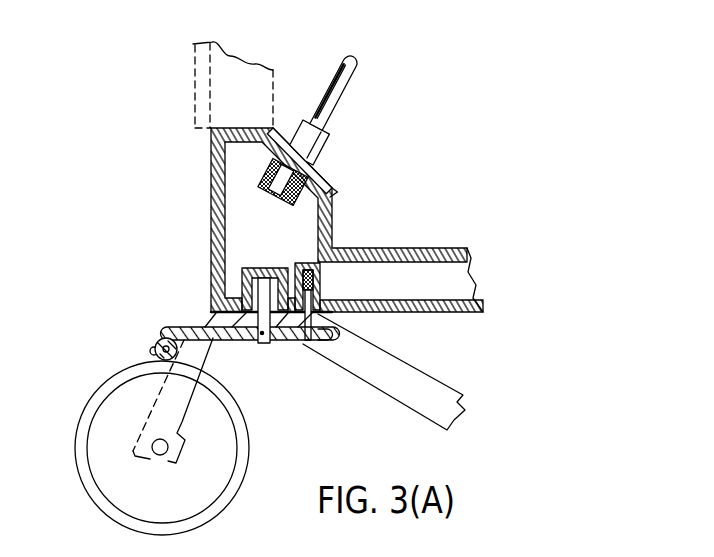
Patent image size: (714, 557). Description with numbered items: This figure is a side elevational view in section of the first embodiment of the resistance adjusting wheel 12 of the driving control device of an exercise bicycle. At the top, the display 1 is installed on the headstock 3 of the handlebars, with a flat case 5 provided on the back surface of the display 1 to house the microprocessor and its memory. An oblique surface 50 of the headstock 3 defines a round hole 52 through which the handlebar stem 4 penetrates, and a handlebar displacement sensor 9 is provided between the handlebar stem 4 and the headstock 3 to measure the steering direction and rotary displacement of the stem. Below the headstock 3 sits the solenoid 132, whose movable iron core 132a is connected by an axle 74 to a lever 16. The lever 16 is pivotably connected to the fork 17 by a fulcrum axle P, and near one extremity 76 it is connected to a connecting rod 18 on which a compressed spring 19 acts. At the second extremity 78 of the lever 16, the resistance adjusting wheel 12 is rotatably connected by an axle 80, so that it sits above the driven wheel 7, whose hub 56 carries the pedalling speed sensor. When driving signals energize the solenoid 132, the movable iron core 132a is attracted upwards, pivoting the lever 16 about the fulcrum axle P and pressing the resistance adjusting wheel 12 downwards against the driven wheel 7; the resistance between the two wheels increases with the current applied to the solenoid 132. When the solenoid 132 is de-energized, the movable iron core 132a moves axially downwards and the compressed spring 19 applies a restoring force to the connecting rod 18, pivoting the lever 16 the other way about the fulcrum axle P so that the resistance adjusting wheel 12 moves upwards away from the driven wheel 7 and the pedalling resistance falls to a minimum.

The display 1 is at (222, 77).
The headstock 3 is at (214, 178).
The handlebar stem 4 is at (344, 84).
The flat case 5 is at (204, 76).
The driven wheel 7 is at (93, 394).
The handlebar displacement sensor 9 is at (330, 126).
The resistance adjusting wheel 12 is at (158, 345).
The lever 16 is at (191, 327).
The fork 17 is at (198, 388).
The connecting rod 18 is at (337, 320).
The compressed spring 19 is at (320, 284).
The oblique surface 50 is at (283, 130).
The round hole 52 is at (325, 165).
The hub 56 is at (155, 451).
The axle 74 is at (258, 345).
The extremity 76 is at (329, 345).
The second extremity 78 is at (165, 338).
The axle 80 is at (158, 350).
The solenoid 132 is at (250, 268).
The movable iron core 132a is at (284, 342).
The fulcrum axle P is at (228, 373).